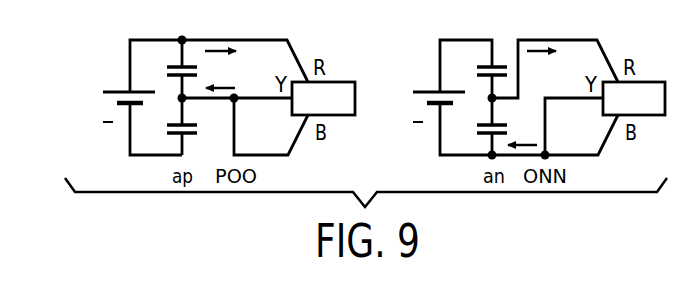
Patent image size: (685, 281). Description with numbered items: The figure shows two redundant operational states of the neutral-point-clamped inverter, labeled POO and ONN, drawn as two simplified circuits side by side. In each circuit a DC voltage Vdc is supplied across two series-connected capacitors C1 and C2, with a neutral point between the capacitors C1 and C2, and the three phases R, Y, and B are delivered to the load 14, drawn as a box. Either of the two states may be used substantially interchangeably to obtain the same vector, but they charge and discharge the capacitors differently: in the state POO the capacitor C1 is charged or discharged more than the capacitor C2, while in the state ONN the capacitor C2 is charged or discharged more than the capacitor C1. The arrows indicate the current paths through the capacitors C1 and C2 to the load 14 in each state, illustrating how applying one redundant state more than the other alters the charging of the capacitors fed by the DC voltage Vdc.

The load 14 is at (345, 80).
The capacitor C1 is at (326, 70).
The capacitor C2 is at (326, 128).
The DC voltage Vdc is at (265, 89).